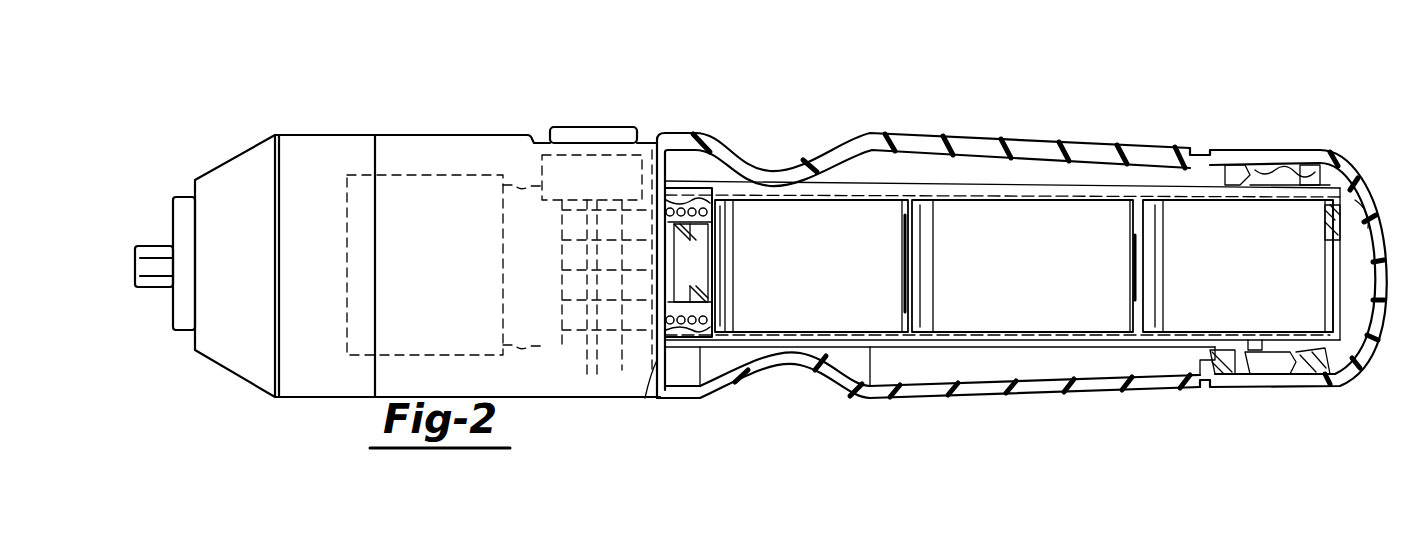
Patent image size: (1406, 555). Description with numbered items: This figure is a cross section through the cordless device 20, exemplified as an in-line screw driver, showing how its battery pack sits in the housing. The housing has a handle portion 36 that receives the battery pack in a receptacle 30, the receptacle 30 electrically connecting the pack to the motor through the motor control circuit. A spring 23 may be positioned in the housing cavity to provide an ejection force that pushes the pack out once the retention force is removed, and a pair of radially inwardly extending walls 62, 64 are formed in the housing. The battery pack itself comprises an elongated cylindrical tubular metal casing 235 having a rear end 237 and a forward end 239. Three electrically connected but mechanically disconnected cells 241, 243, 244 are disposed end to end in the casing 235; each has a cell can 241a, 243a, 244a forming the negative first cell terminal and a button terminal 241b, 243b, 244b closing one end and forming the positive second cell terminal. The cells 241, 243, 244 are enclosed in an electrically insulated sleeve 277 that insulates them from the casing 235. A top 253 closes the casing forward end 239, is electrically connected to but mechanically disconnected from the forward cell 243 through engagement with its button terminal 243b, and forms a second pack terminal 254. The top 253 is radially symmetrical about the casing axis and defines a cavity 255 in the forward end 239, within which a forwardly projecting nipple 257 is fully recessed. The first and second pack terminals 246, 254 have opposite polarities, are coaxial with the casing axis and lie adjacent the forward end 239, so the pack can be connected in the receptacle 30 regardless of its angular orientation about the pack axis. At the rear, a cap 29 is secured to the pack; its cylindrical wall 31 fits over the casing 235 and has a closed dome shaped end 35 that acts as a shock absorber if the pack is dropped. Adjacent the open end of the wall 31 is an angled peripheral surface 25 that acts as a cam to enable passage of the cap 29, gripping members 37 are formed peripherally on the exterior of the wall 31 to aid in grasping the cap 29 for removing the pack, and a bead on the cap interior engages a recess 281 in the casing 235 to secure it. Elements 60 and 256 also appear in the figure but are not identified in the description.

The cordless device 20 is at (897, 119).
The spring 23 is at (700, 328).
The angled peripheral surface 25 is at (1200, 378).
The cap 29 is at (1384, 292).
The receptacle 30 is at (660, 245).
The cylindrical wall 31 is at (1288, 185).
The dome shaped end 35 is at (1243, 182).
The handle portion 36 is at (1013, 153).
The gripping members 37 is at (1318, 178).
The release button 60 is at (1268, 372).
The radially inwardly extending wall 62 is at (1279, 368).
The radially inwardly extending wall 64 is at (1220, 377).
The tubular metal casing 235 is at (765, 192).
The rear end 237 is at (1370, 348).
The forward end 239 is at (700, 200).
The cell 241 is at (1213, 321).
The cell can 241a is at (1279, 266).
The button terminal 241b is at (1145, 264).
The cell 243 is at (811, 321).
The cell can 243a is at (862, 305).
The button terminal 243b is at (733, 238).
The cell 244 is at (1020, 321).
The cell can 244a is at (965, 295).
The button terminal 244b is at (906, 258).
The first pack terminal 246 is at (660, 358).
The top 253 is at (660, 300).
The second pack terminal 254 is at (660, 282).
The cavity 255 is at (670, 198).
The switch lead 256 is at (660, 318).
The nipple 257 is at (660, 232).
The electrically insulated sleeve 277 is at (779, 340).
The recess 281 is at (1249, 340).